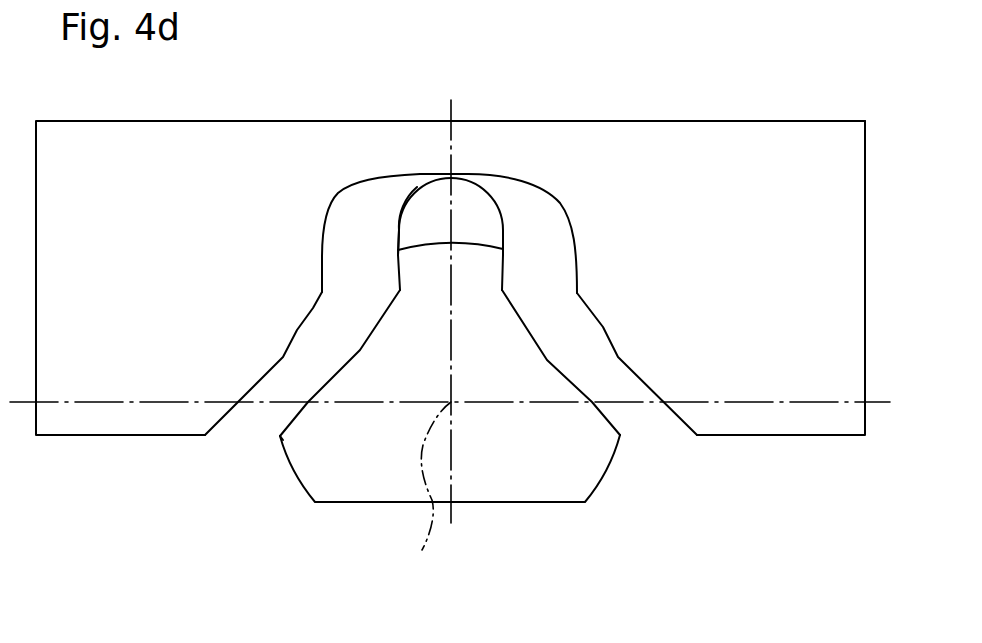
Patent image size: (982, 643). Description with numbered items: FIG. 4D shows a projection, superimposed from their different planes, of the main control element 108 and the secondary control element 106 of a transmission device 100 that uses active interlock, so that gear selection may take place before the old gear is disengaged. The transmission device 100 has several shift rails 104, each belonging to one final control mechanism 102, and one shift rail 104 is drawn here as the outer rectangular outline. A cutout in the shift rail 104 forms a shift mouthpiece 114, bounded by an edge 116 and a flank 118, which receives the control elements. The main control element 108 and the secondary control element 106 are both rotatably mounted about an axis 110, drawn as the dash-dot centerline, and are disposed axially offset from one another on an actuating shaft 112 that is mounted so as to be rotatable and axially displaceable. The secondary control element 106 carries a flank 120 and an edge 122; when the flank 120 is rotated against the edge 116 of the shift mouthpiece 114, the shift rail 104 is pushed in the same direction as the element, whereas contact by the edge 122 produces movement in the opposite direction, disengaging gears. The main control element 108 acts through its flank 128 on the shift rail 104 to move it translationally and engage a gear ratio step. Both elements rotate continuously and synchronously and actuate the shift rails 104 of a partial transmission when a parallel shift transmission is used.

The transmission device 100 is at (688, 482).
The final control mechanism 102 is at (807, 413).
The shift rail 104 is at (695, 143).
The secondary control element 106 is at (488, 457).
The main control element 108 is at (470, 195).
The axis 110 is at (427, 490).
The actuating shaft 112 is at (392, 515).
The shift mouthpiece 114 is at (566, 264).
The edge 116 is at (325, 292).
The flank 118 is at (221, 413).
The flank 120 is at (398, 273).
The edge 122 is at (280, 436).
The flank 128 is at (405, 217).